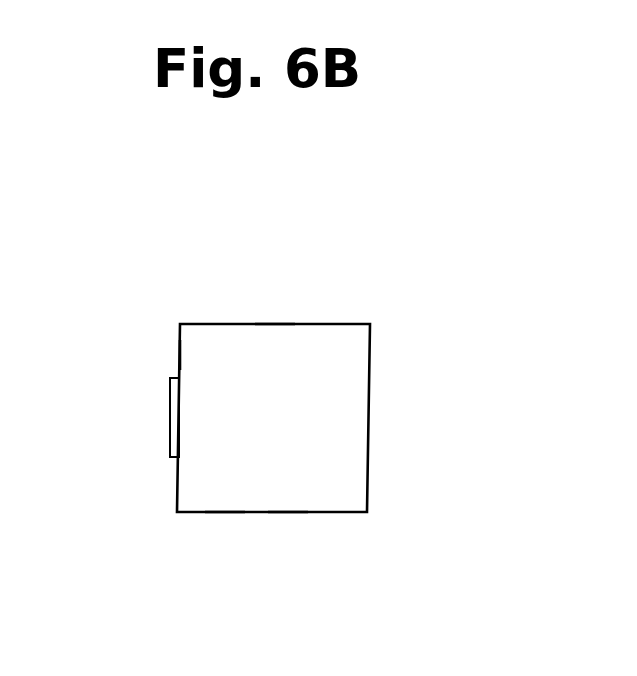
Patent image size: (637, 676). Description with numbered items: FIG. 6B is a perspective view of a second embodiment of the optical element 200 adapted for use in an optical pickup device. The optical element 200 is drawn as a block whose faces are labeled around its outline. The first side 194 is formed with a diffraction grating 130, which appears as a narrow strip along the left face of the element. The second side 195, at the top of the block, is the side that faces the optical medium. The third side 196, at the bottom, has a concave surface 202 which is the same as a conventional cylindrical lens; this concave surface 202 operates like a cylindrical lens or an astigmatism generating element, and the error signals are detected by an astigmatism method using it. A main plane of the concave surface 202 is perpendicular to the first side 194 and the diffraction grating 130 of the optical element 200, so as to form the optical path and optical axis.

The optical element 200 is at (381, 319).
The diffraction grating 130 is at (172, 427).
The first side 194 is at (180, 355).
The second side 195 is at (274, 324).
The third side 196 is at (225, 513).
The concave surface 202 is at (288, 513).